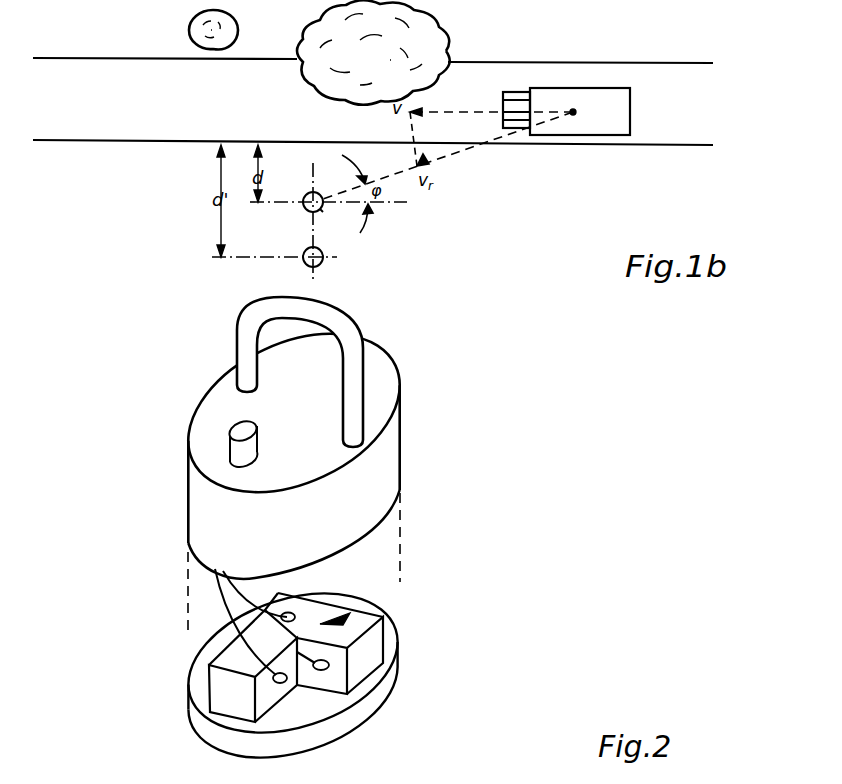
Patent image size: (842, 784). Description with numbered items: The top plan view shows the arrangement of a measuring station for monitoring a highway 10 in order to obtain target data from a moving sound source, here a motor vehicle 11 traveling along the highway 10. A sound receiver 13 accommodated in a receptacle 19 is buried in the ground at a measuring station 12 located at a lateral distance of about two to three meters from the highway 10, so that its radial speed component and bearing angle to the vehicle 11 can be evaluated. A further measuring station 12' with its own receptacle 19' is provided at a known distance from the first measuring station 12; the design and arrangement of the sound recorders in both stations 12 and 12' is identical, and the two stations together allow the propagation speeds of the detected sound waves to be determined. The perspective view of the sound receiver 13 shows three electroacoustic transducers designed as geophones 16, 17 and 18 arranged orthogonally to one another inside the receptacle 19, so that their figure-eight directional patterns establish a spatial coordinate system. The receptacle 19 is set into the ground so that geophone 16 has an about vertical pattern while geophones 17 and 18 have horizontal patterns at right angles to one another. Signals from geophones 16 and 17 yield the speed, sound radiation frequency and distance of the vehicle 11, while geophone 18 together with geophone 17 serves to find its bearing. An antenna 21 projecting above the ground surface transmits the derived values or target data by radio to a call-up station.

In FIG. 1b, the highway 10 is at (660, 127).
In FIG. 1b, the motor vehicle 11 is at (600, 125).
In FIG. 1b, the measuring station 12 is at (325, 181).
In FIG. 1b, the further measuring station 12' is at (257, 280).
In FIG. 2, the sound receiver 13 is at (348, 618).
In FIG. 2, the geophone 16 is at (292, 614).
In FIG. 2, the geophone 17 is at (274, 681).
In FIG. 2, the geophone 18 is at (327, 669).
In FIG. 1b, the receptacle 19 is at (278, 222).
In FIG. 2, the receptacle 19 is at (320, 438).
In FIG. 1b, the receptacle 19' is at (361, 275).
In FIG. 1b, the antenna 21 is at (323, 208).
In FIG. 2, the antenna 21 is at (238, 435).